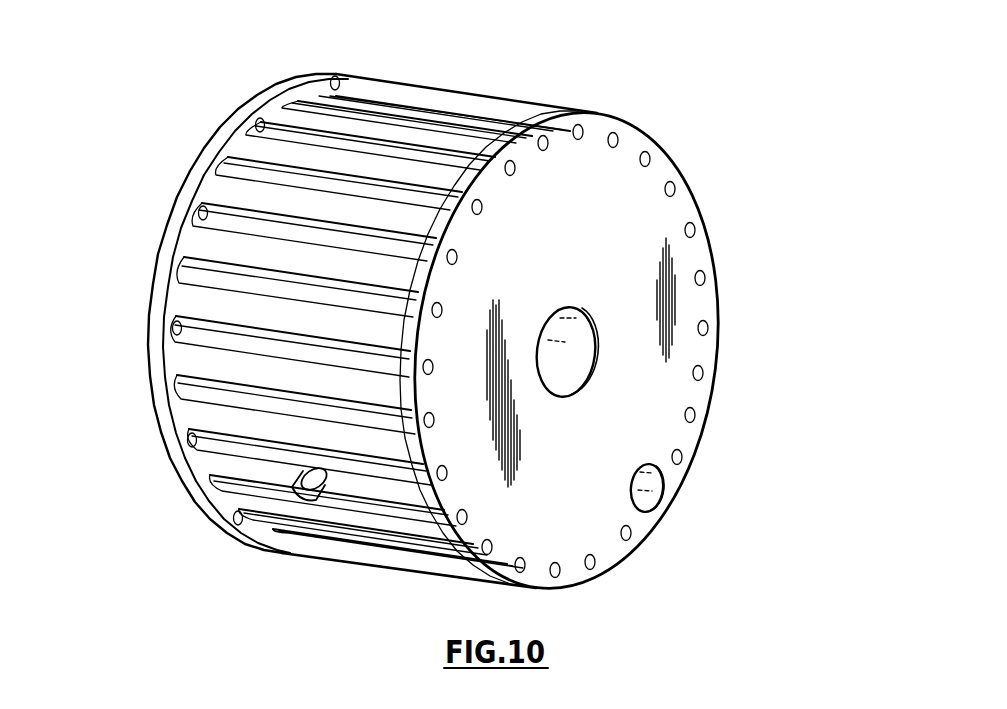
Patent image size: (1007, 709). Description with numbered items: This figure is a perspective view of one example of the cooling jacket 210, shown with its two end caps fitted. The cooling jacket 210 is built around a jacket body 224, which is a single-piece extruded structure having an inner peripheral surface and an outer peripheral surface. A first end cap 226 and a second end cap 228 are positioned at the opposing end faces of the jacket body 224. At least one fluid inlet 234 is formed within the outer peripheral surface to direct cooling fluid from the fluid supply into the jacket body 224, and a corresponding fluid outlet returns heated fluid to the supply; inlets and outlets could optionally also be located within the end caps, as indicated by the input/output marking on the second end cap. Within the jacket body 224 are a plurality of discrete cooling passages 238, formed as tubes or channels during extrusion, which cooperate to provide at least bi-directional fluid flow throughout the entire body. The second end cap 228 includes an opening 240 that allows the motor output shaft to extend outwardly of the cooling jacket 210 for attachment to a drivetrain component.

The cooling jacket 210 is at (752, 196).
The jacket body 224 is at (363, 163).
The first end cap 226 is at (160, 302).
The second end cap 228 is at (684, 392).
The fluid inlet 234 is at (312, 487).
The cooling passages 238 is at (365, 441).
The opening 240 is at (565, 348).